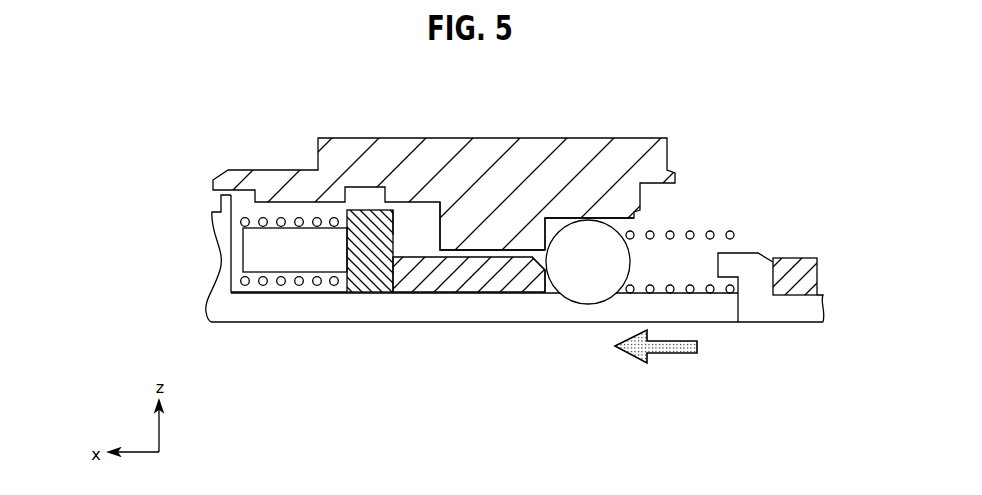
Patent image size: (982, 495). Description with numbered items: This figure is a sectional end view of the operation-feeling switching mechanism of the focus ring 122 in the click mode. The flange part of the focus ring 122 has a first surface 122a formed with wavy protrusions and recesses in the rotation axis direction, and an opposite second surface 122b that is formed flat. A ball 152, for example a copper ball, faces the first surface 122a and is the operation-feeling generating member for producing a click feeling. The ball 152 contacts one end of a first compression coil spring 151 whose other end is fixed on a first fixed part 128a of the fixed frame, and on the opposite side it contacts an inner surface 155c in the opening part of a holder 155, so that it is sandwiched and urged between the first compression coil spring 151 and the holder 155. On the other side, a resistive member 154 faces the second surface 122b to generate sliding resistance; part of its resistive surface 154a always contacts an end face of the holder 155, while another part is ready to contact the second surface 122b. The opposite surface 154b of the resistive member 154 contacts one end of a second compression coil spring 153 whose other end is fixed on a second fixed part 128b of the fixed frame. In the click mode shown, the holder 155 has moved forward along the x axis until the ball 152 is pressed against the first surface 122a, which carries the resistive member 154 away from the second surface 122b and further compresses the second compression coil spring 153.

The focus ring 122 is at (318, 142).
The first surface 122a is at (560, 217).
The second surface 122b is at (426, 232).
The first fixed part 128a is at (740, 253).
The second fixed part 128b is at (220, 247).
The first compression coil spring 151 is at (710, 293).
The ball 152 is at (587, 280).
The second compression coil spring 153 is at (243, 293).
The resistive member 154 is at (360, 292).
The resistive surface 154a is at (396, 232).
The surface 154b is at (343, 291).
The holder 155 is at (470, 284).
The inner surface 155c is at (548, 292).